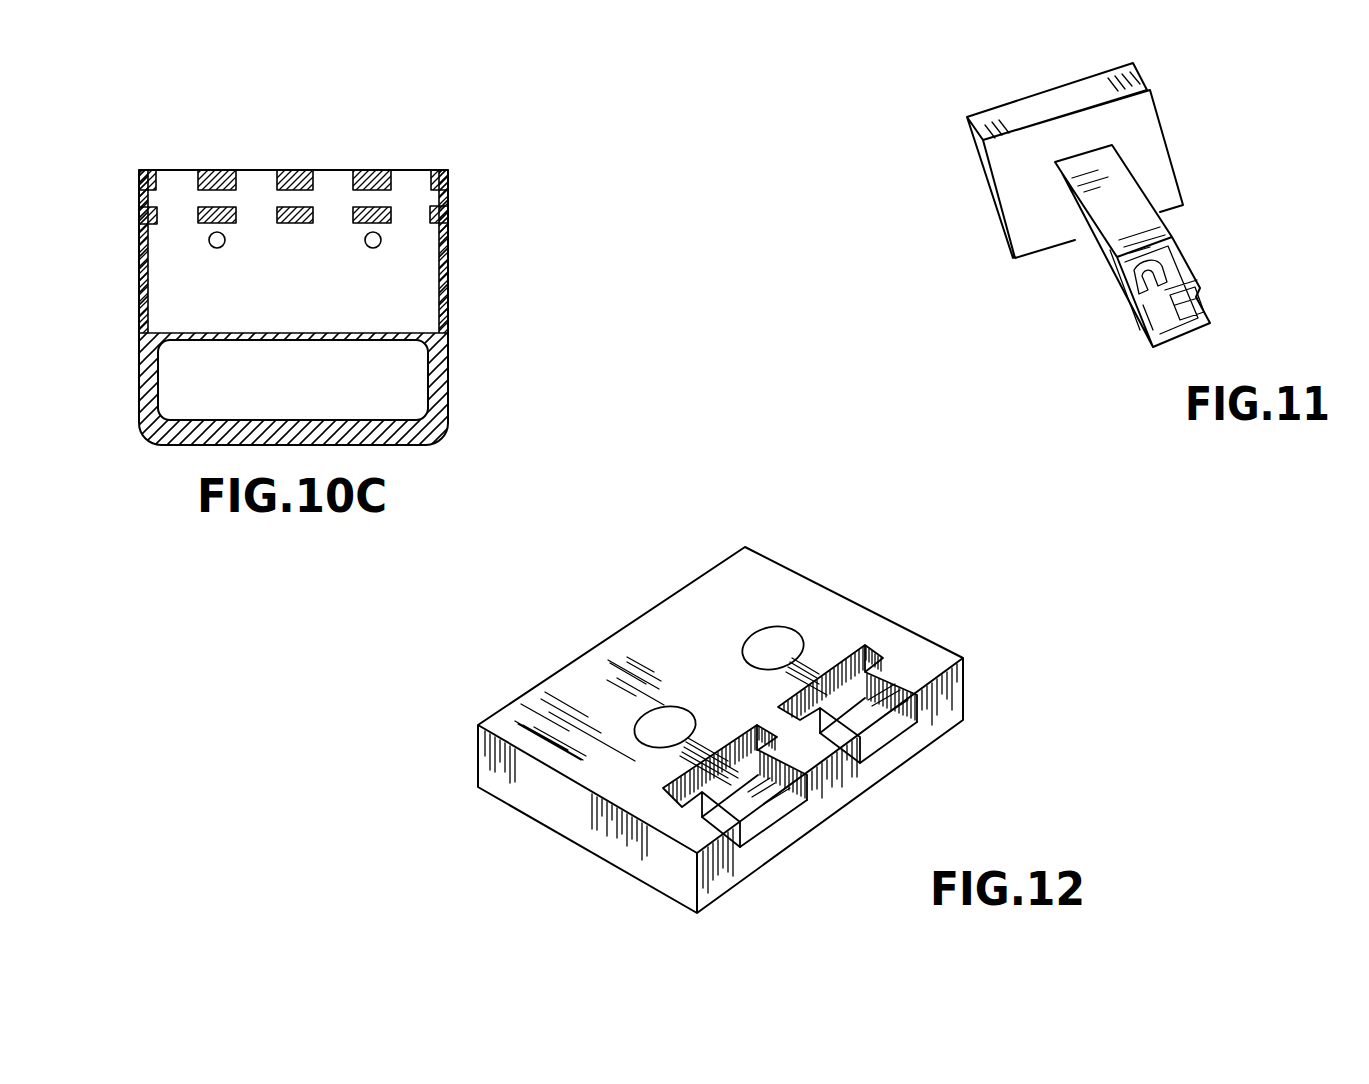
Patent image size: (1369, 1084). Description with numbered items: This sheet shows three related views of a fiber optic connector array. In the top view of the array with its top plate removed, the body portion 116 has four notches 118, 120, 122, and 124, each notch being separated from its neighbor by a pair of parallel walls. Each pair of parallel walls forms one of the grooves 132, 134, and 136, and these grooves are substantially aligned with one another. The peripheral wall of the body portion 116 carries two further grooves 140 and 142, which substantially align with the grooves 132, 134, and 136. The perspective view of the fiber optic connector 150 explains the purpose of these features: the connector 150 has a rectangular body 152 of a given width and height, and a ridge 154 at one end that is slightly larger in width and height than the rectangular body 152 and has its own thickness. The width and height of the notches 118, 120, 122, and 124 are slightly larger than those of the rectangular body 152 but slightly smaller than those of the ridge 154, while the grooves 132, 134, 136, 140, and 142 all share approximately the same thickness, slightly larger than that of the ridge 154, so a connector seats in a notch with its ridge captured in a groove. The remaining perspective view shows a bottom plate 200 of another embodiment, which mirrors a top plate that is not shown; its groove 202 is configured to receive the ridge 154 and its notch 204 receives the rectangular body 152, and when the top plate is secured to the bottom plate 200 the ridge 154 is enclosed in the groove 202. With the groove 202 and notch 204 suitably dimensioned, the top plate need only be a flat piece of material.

In FIG. 10C, the body portion 116 is at (485, 298).
In FIG. 10C, the notch 118 is at (413, 190).
In FIG. 10C, the notch 120 is at (335, 210).
In FIG. 10C, the notch 122 is at (258, 210).
In FIG. 10C, the notch 124 is at (175, 207).
In FIG. 10C, the groove 132 is at (372, 195).
In FIG. 10C, the groove 134 is at (297, 197).
In FIG. 10C, the groove 136 is at (222, 195).
In FIG. 10C, the groove 140 is at (440, 197).
In FIG. 10C, the groove 142 is at (145, 197).
In FIG. 11, the fiber optic connector 150 is at (1152, 234).
In FIG. 11, the rectangular body 152 is at (1097, 242).
In FIG. 11, the ridge 154 is at (1025, 232).
In FIG. 12, the bottom plate 200 is at (935, 607).
In FIG. 12, the groove 202 is at (848, 672).
In FIG. 12, the notch 204 is at (772, 812).